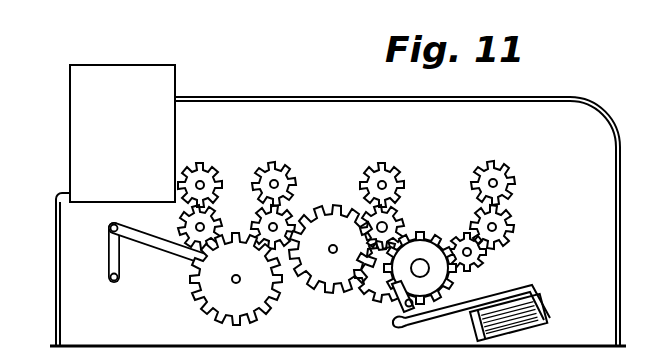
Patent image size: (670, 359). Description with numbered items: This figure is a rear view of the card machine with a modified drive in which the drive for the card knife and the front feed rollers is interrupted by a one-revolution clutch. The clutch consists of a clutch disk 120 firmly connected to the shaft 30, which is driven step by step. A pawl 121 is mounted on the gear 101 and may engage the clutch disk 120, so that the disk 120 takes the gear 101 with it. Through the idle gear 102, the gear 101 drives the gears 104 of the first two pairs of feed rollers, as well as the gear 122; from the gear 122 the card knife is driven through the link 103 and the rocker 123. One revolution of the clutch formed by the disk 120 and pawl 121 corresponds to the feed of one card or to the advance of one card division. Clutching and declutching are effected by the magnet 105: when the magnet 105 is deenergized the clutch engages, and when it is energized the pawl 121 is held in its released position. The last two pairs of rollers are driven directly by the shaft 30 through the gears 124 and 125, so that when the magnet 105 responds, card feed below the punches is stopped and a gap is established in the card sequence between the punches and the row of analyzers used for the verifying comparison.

The shaft 30 is at (420, 260).
The gear 101 is at (390, 276).
The idle gear 102 is at (328, 260).
The link 103 is at (145, 240).
The gears 104 is at (218, 222).
The magnet 105 is at (502, 318).
The clutch disk 120 is at (442, 273).
The pawl 121 is at (391, 297).
The gear 122 is at (215, 296).
The rocker 123 is at (113, 258).
The gears 124 is at (382, 165).
The gear 125 is at (483, 258).